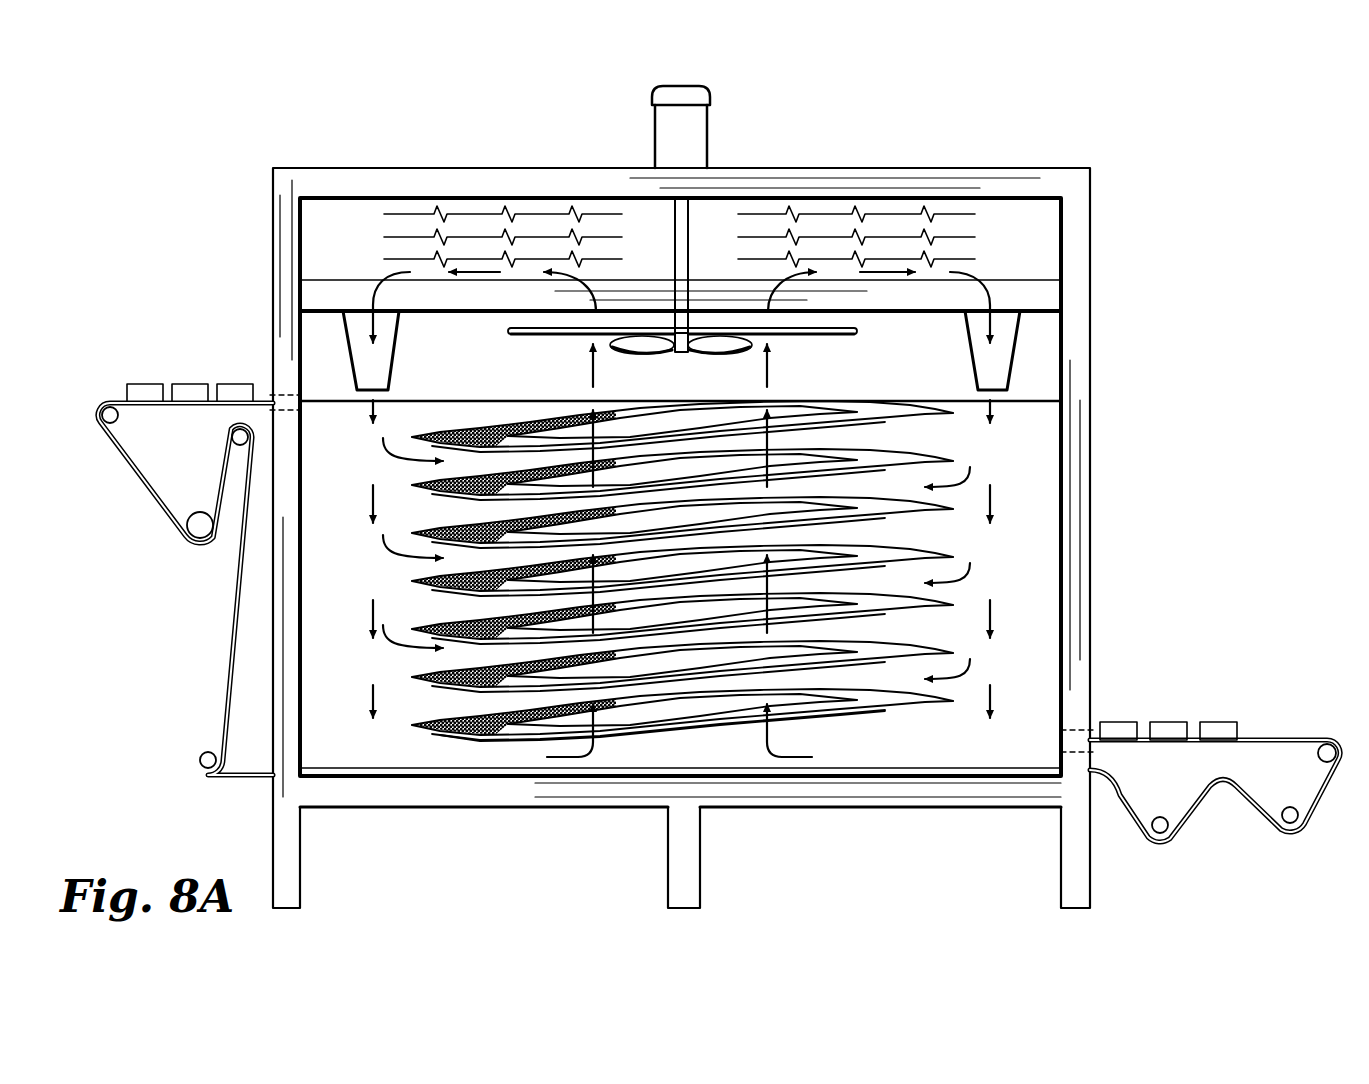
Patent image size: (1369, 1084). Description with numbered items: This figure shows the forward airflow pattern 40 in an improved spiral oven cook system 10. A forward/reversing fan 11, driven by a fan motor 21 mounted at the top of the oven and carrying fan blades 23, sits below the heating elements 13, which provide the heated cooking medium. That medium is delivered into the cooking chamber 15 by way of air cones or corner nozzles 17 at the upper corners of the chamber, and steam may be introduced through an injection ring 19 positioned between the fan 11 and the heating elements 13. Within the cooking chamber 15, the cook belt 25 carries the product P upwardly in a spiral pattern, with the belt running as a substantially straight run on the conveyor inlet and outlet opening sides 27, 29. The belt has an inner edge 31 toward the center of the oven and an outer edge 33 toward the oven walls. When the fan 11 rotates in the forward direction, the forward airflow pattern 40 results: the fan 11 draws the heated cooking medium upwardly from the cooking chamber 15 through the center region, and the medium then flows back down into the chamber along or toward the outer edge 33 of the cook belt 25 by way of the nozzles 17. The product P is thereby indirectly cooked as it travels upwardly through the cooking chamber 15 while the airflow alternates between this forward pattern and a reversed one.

The spiral oven cooking system 10 is at (1112, 260).
The forward/reversing fan 11 is at (679, 364).
The heating elements 13 is at (812, 214).
The cooking chamber 15 is at (1036, 463).
The air cones or corner nozzles 17 is at (1018, 350).
The injection ring 19 is at (506, 333).
The fan motor 21 is at (712, 97).
The fan blades 23 is at (636, 348).
The cook belt 25 is at (644, 594).
The inlet opening side 27 is at (1175, 755).
The outlet opening side 29 is at (264, 392).
The inner edge of cook belt 31 is at (532, 737).
The outer edge of cook belt 33 is at (644, 769).
The forward airflow pattern 40 is at (372, 500).
The product P is at (1230, 722).